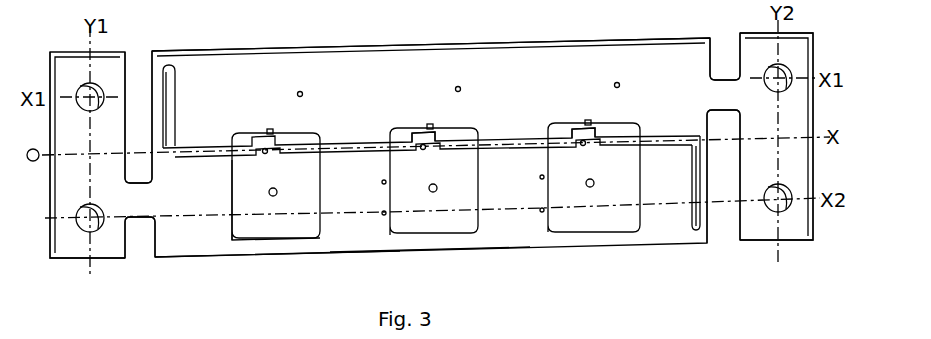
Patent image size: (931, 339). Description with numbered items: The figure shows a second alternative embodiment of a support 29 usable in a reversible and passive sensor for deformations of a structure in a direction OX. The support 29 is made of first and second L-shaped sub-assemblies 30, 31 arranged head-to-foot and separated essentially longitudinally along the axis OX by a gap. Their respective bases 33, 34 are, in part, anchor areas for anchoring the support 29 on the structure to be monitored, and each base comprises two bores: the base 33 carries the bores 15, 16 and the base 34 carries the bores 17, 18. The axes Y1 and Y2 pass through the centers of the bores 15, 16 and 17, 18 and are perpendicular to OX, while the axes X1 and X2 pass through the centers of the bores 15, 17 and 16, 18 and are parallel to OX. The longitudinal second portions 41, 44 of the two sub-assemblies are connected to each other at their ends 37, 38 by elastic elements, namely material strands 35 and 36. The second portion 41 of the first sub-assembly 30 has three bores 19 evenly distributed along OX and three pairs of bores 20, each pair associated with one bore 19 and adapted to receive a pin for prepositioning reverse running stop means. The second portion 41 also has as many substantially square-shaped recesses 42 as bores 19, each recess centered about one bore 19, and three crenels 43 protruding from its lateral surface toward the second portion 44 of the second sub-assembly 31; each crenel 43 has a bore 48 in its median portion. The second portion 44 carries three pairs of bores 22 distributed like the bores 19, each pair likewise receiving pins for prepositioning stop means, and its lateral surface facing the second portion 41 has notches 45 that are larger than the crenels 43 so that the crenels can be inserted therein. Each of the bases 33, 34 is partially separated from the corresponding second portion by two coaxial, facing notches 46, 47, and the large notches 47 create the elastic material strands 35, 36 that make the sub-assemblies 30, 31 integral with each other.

The bore 15 is at (78, 93).
The bore 16 is at (80, 210).
The bore 17 is at (790, 72).
The bore 18 is at (790, 185).
The bore 19 is at (284, 177).
The pair of bores 20 is at (540, 210).
The pair of bores 22 is at (297, 94).
The support 29 is at (255, 265).
The first L-shaped sub-assembly 30 is at (493, 244).
The second L-shaped sub-assembly 31 is at (472, 52).
The base 33 is at (75, 262).
The base 34 is at (763, 242).
The material strand 35 is at (163, 82).
The material strand 36 is at (703, 180).
The end 37 is at (172, 101).
The end 38 is at (692, 207).
The second portion 41 is at (358, 245).
The square-shaped recess 42 is at (393, 202).
The crenel 43 is at (267, 156).
The second portion 44 is at (390, 50).
The notch 45 is at (553, 128).
The notch 46 is at (140, 242).
The large notch 47 is at (138, 100).
The bore 48 is at (424, 150).